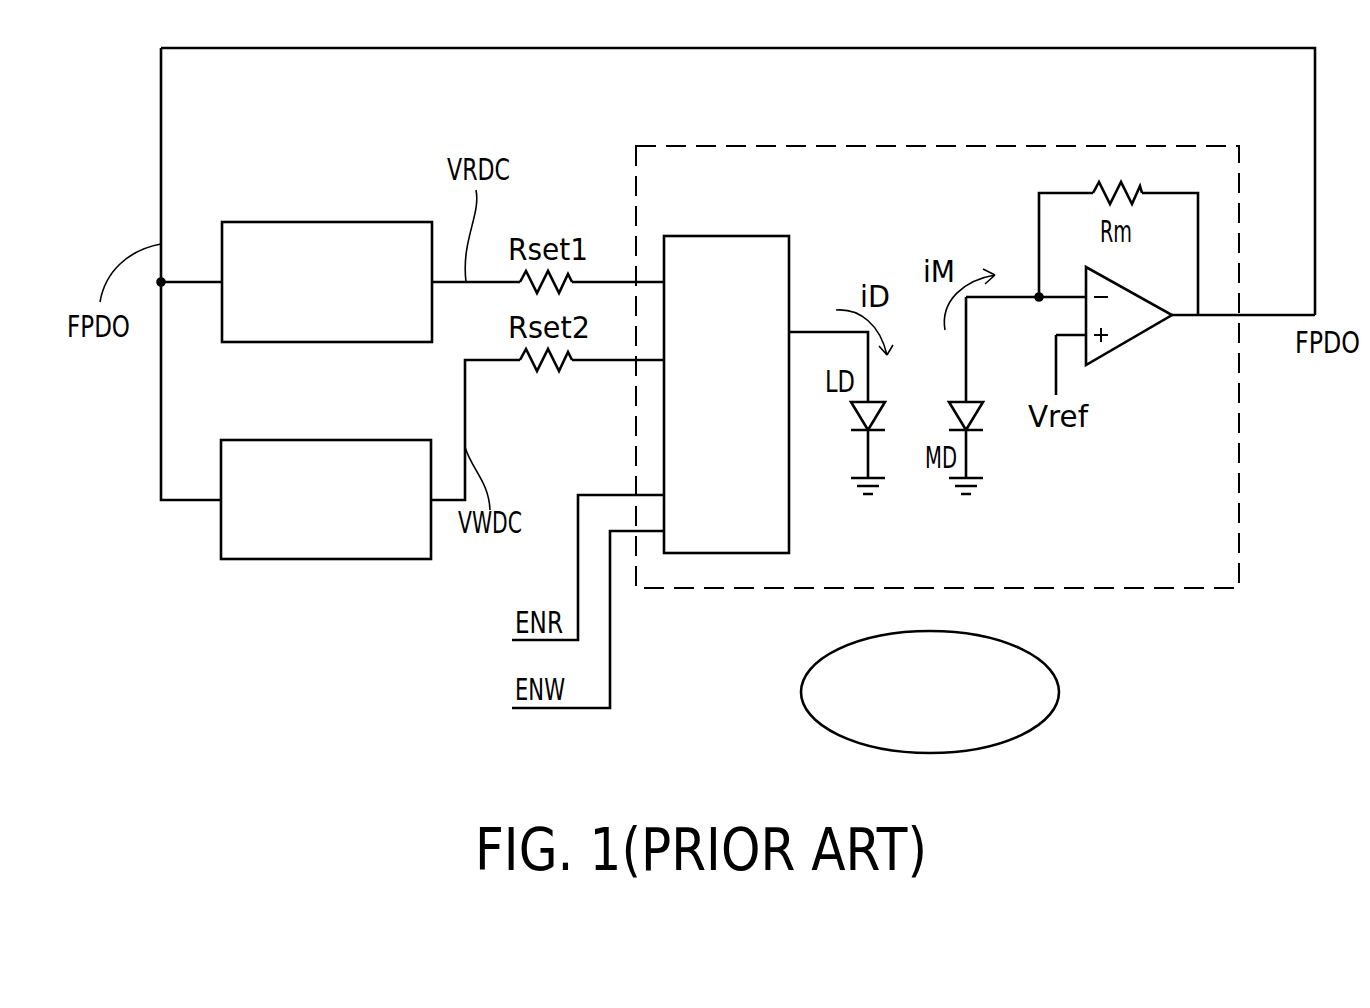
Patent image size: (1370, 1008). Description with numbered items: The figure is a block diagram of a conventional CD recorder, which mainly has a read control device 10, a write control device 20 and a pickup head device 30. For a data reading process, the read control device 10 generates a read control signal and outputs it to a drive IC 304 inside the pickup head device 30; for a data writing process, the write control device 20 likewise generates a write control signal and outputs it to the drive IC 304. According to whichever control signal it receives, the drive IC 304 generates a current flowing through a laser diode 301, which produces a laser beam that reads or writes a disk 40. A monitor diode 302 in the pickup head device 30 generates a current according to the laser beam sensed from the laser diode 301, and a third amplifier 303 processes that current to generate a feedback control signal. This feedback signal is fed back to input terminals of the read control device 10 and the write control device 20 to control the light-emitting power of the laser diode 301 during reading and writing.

The read control device 10 is at (326, 222).
The write control device 20 is at (322, 560).
The pickup head device 30 is at (937, 146).
The disk 40 is at (1060, 690).
The laser diode 301 is at (857, 418).
The monitor diode 302 is at (975, 418).
The third amplifier 303 is at (1127, 345).
The drive IC 304 is at (720, 555).